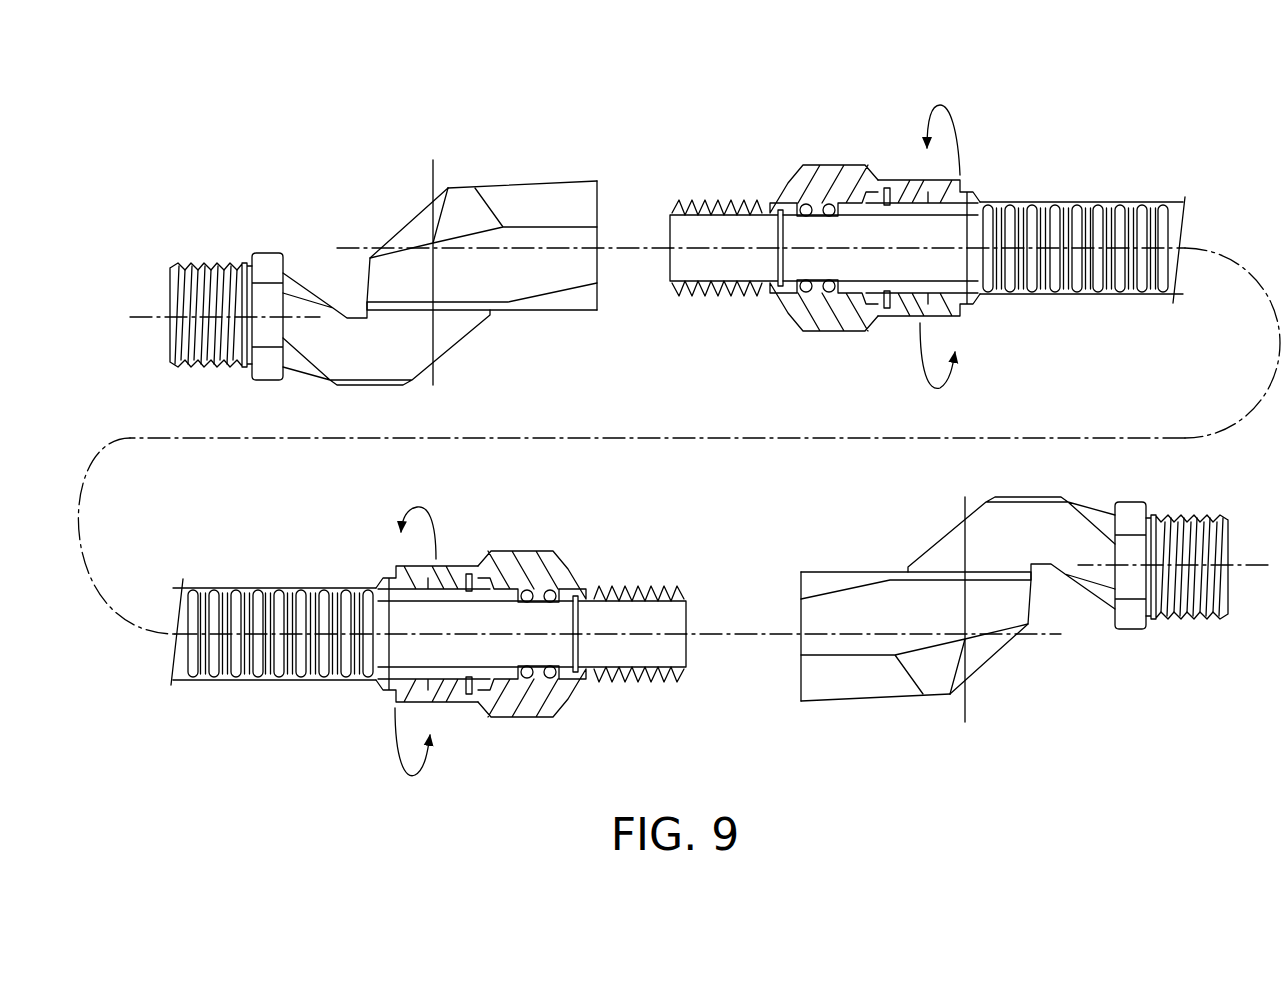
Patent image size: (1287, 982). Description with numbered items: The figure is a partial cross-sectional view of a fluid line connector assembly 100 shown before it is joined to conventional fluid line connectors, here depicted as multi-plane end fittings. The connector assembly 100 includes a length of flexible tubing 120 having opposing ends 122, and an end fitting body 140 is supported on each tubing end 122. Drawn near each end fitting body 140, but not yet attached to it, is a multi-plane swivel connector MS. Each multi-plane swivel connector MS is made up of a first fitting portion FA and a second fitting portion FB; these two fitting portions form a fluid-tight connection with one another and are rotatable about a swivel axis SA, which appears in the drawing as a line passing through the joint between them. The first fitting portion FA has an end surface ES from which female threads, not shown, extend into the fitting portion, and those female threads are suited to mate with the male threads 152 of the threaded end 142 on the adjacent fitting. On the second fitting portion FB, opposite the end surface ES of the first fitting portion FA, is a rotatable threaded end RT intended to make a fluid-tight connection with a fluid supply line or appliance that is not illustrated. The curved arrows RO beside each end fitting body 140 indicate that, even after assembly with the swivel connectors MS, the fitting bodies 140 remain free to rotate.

The fluid line connector assembly 100 is at (1163, 152).
The flexible tubing 120 is at (1050, 232).
The tubing end 122 is at (858, 240).
The end fitting body 140 is at (828, 162).
The threaded end 142 is at (685, 192).
The male threads 152 is at (720, 190).
The arrows indicating rotation RO is at (677, 440).
The rotatable threaded end RT is at (180, 262).
The second fitting portion FB is at (307, 290).
The multi-plane swivel connector MS is at (393, 188).
The swivel axis SA is at (436, 180).
The first fitting portion FA is at (545, 197).
The end surface ES is at (600, 206).